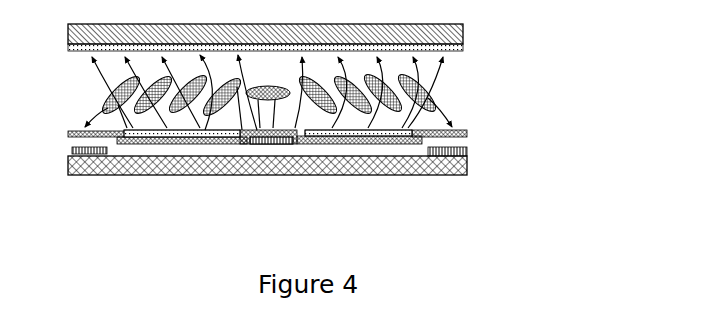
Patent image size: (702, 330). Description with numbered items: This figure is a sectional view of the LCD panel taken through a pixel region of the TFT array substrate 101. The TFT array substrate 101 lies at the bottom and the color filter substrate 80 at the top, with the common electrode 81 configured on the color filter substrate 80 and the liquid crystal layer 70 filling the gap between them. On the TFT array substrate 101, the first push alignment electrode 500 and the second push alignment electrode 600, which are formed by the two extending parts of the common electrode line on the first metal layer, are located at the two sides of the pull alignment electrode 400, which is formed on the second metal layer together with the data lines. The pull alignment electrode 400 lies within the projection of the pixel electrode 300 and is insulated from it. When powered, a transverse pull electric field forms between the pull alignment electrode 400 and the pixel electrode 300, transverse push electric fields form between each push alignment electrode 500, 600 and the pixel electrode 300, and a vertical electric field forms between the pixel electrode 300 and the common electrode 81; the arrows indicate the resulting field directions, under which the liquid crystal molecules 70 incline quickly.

The color filter substrate 80 is at (464, 26).
The common electrode 81 is at (465, 49).
The liquid crystal layer 70 is at (430, 88).
The TFT array substrate 101 is at (467, 157).
The pixel electrode 300 is at (188, 180).
The pull alignment electrode 400 is at (253, 180).
The first push alignment electrode 500 is at (443, 177).
The second push alignment electrode 600 is at (83, 180).